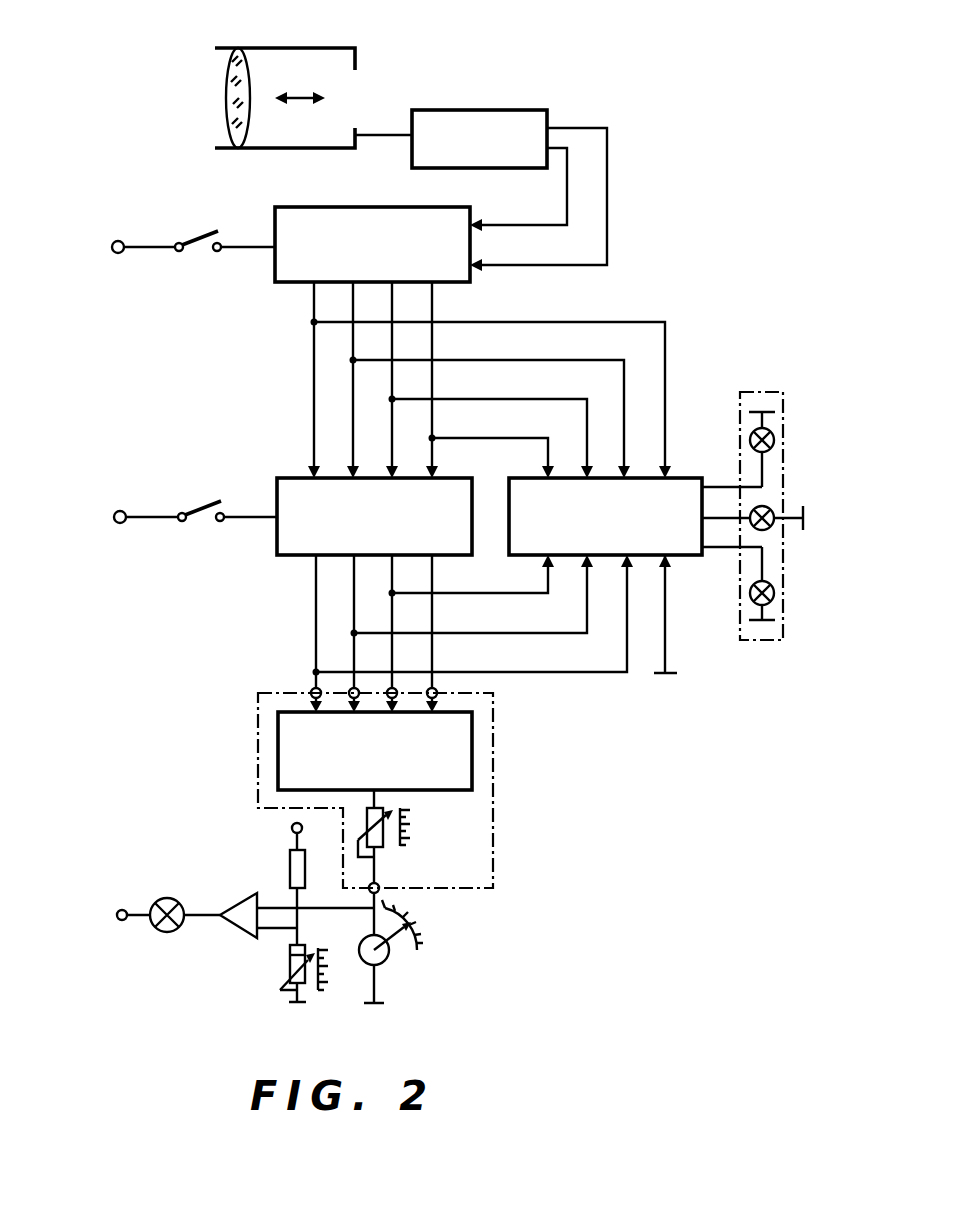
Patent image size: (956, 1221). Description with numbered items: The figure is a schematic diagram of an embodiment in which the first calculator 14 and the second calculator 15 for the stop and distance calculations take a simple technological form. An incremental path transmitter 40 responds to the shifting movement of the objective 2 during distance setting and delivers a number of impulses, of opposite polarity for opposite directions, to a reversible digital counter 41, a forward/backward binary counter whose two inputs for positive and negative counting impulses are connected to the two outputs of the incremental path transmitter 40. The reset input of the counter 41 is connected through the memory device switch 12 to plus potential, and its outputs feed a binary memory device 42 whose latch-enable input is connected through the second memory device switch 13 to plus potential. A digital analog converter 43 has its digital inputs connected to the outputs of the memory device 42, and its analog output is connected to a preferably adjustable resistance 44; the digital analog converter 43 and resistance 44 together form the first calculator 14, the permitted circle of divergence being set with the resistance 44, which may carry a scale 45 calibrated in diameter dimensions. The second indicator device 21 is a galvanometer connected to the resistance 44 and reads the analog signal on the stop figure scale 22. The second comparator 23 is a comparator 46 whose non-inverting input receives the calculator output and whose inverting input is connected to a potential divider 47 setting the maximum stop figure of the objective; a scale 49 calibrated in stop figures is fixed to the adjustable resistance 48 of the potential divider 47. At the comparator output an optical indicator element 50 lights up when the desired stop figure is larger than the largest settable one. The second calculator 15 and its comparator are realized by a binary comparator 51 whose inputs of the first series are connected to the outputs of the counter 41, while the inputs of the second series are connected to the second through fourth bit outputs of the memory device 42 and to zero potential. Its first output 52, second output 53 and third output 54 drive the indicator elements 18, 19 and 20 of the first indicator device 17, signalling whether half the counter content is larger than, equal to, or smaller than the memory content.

The objective 2 is at (268, 57).
The incremental path transmitter 40 is at (462, 111).
The reversible digital counter 41 is at (275, 264).
The memory device switch 12 is at (192, 241).
The second memory device switch 13 is at (195, 511).
The second calculator 15 is at (694, 364).
The first calculator 14 is at (493, 857).
The binary memory device 42 is at (277, 477).
The binary comparator 51 is at (529, 478).
The digital analog converter 43 is at (472, 744).
The resistance 44 is at (383, 846).
The scale 45 is at (412, 829).
The second indicator device 21 is at (387, 961).
The stop figure scale 22 is at (424, 925).
The second comparator 23 is at (274, 876).
The comparator 46 is at (228, 925).
The indicator element 50 is at (154, 926).
The potential divider 47 is at (302, 948).
The adjustable resistance 48 is at (289, 957).
The scale 49 is at (323, 992).
The first indicator device 17 is at (741, 630).
The indicator element 18 is at (750, 437).
The indicator element 19 is at (768, 507).
The indicator element 20 is at (750, 597).
The first output 52 is at (762, 466).
The second output 53 is at (748, 524).
The third output 54 is at (748, 550).